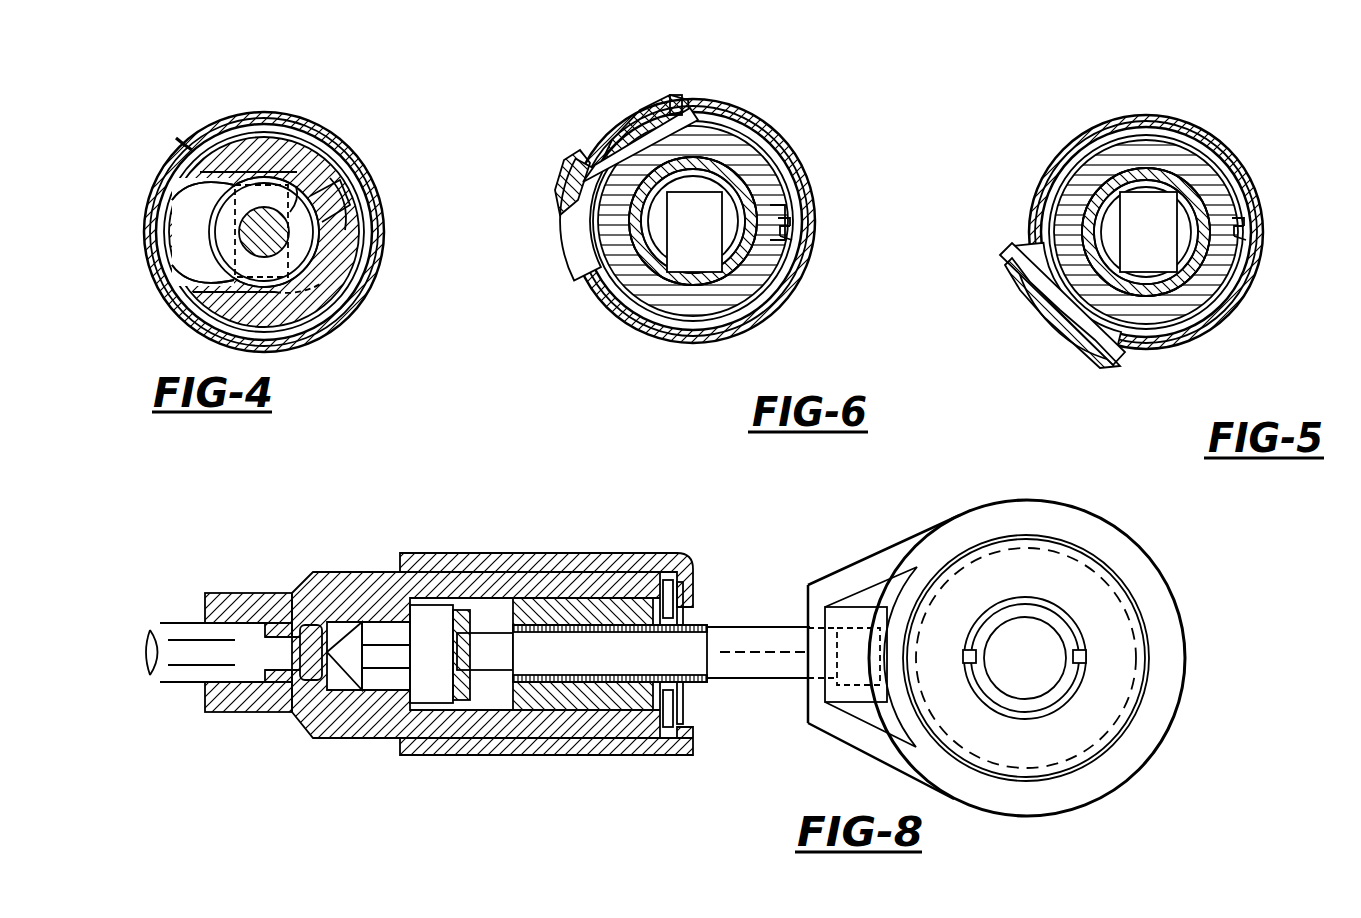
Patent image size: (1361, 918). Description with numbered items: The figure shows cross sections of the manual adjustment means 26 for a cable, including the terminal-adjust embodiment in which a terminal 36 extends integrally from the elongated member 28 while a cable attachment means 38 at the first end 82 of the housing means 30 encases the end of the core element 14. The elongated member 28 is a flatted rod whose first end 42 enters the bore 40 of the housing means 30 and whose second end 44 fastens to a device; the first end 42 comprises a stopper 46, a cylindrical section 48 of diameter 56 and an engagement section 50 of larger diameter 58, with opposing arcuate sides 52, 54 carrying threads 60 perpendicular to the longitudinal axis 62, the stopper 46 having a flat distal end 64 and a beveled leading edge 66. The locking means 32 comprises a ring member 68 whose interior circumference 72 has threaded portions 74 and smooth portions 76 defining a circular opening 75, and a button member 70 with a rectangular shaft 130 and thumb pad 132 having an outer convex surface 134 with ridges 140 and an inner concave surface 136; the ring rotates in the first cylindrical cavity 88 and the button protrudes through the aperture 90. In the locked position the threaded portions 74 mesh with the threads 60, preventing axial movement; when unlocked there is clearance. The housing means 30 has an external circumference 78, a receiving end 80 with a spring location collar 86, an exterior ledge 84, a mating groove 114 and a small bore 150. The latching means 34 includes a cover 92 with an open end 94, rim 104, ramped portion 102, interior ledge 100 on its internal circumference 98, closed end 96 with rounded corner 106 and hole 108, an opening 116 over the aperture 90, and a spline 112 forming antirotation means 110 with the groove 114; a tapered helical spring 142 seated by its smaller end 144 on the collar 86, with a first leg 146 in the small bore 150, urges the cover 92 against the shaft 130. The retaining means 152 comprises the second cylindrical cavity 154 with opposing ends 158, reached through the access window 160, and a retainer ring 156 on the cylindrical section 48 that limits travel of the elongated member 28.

In FIG. 8, the core element 14 is at (160, 680).
In FIG. 4, the adjustment means 26 is at (365, 135).
In FIG. 6, the adjustment means 26 is at (880, 140).
In FIG. 5, the adjustment means 26 is at (1262, 135).
In FIG. 8, the adjustment means 26 is at (1135, 580).
In FIG. 4, the elongated member 28 is at (366, 190).
In FIG. 6, the elongated member 28 is at (770, 200).
In FIG. 5, the elongated member 28 is at (1235, 195).
In FIG. 8, the elongated member 28 is at (770, 625).
In FIG. 4, the housing means 30 is at (332, 247).
In FIG. 6, the housing means 30 is at (770, 135).
In FIG. 5, the housing means 30 is at (1167, 150).
In FIG. 8, the housing means 30 is at (318, 740).
In FIG. 6, the locking means 32 is at (590, 235).
In FIG. 5, the locking means 32 is at (1030, 325).
In FIG. 8, the locking means 32 is at (560, 580).
In FIG. 4, the latching means 34 is at (378, 232).
In FIG. 6, the latching means 34 is at (810, 318).
In FIG. 5, the latching means 34 is at (1193, 150).
In FIG. 8, the latching means 34 is at (692, 756).
In FIG. 8, the terminal 36 is at (1130, 793).
In FIG. 8, the cable attachment means 38 is at (233, 593).
In FIG. 4, the bore 40 is at (325, 178).
In FIG. 6, the bore 40 is at (640, 270).
In FIG. 5, the bore 40 is at (1065, 262).
In FIG. 8, the bore 40 is at (362, 622).
In FIG. 8, the first end 42 is at (440, 645).
In FIG. 8, the second end 44 is at (845, 628).
In FIG. 8, the stopper 46 is at (462, 610).
In FIG. 4, the cylindrical section 48 is at (300, 178).
In FIG. 8, the cylindrical section 48 is at (500, 712).
In FIG. 6, the engagement section 50 is at (735, 165).
In FIG. 5, the engagement section 50 is at (1180, 160).
In FIG. 8, the engagement section 50 is at (532, 612).
In FIG. 4, the arcuate side 52 is at (241, 130).
In FIG. 6, the arcuate side 52 is at (668, 140).
In FIG. 5, the arcuate side 52 is at (1112, 140).
In FIG. 8, the arcuate side 52 is at (575, 598).
In FIG. 4, the arcuate side 54 is at (372, 290).
In FIG. 6, the arcuate side 54 is at (712, 290).
In FIG. 5, the arcuate side 54 is at (1170, 300).
In FIG. 8, the arcuate side 54 is at (550, 712).
In FIG. 4, the diameter 56 is at (222, 210).
In FIG. 6, the diameter 56 is at (693, 221).
In FIG. 5, the diameter 56 is at (1146, 232).
In FIG. 8, the diameter 56 is at (517, 651).
In FIG. 4, the diameter 58 is at (264, 232).
In FIG. 6, the diameter 58 is at (694, 232).
In FIG. 5, the diameter 58 is at (1142, 292).
In FIG. 8, the diameter 58 is at (610, 653).
In FIG. 6, the threads 60 is at (700, 157).
In FIG. 5, the threads 60 is at (1138, 160).
In FIG. 8, the threads 60 is at (620, 598).
In FIG. 8, the longitudinal axis 62 is at (815, 720).
In FIG. 8, the distal end 64 is at (440, 660).
In FIG. 8, the beveled circumferential leading edge 66 is at (410, 700).
In FIG. 6, the ring member 68 is at (745, 160).
In FIG. 5, the ring member 68 is at (1240, 205).
In FIG. 8, the ring member 68 is at (530, 712).
In FIG. 6, the button member 70 is at (652, 97).
In FIG. 5, the button member 70 is at (1045, 330).
In FIG. 6, the interior circumference 72 is at (775, 275).
In FIG. 5, the interior circumference 72 is at (1200, 300).
In FIG. 6, the threaded portions 74 is at (755, 180).
In FIG. 5, the threaded portions 74 is at (1050, 232).
In FIG. 8, the threaded portions 74 is at (590, 598).
In FIG. 6, the circular opening 75 is at (730, 295).
In FIG. 5, the circular opening 75 is at (1215, 175).
In FIG. 6, the smooth portions 76 is at (785, 205).
In FIG. 5, the smooth portions 76 is at (1145, 168).
In FIG. 4, the external circumference 78 is at (318, 342).
In FIG. 6, the external circumference 78 is at (765, 320).
In FIG. 5, the external circumference 78 is at (1245, 290).
In FIG. 8, the receiving end 80 is at (675, 600).
In FIG. 8, the first end 82 is at (290, 592).
In FIG. 8, the exterior ledge 84 is at (480, 572).
In FIG. 8, the spring location collar 86 is at (695, 600).
In FIG. 6, the first internal cylindrical cavity 88 is at (676, 290).
In FIG. 5, the first internal cylindrical cavity 88 is at (1095, 180).
In FIG. 8, the first internal cylindrical cavity 88 is at (522, 590).
In FIG. 6, the aperture 90 is at (660, 290).
In FIG. 5, the aperture 90 is at (1070, 190).
In FIG. 4, the cover 92 is at (145, 185).
In FIG. 6, the cover 92 is at (786, 295).
In FIG. 5, the cover 92 is at (1236, 322).
In FIG. 8, the cover 92 is at (706, 723).
In FIG. 8, the open end 94 is at (385, 572).
In FIG. 8, the closed end 96 is at (700, 745).
In FIG. 4, the internal circumference 98 is at (186, 145).
In FIG. 6, the internal circumference 98 is at (730, 140).
In FIG. 5, the internal circumference 98 is at (1240, 300).
In FIG. 8, the ramped interior ledge 100 is at (512, 553).
In FIG. 8, the ramped circumferential portion 102 is at (440, 572).
In FIG. 8, the rim 104 is at (395, 572).
In FIG. 8, the rounded circumferential corner 106 is at (690, 595).
In FIG. 8, the hole 108 is at (700, 610).
In FIG. 6, the antirotation means 110 is at (792, 220).
In FIG. 5, the antirotation means 110 is at (1246, 220).
In FIG. 6, the spline 112 is at (795, 230).
In FIG. 5, the spline 112 is at (1248, 232).
In FIG. 6, the mating groove 114 is at (795, 245).
In FIG. 5, the mating groove 114 is at (1248, 248).
In FIG. 6, the opening 116 is at (625, 285).
In FIG. 5, the opening 116 is at (1050, 200).
In FIG. 6, the rectangular shaft 130 is at (565, 180).
In FIG. 5, the rectangular shaft 130 is at (1080, 340).
In FIG. 6, the thumb pad 132 is at (580, 140).
In FIG. 5, the thumb pad 132 is at (1010, 300).
In FIG. 6, the outer convex surface 134 is at (555, 190).
In FIG. 5, the outer convex surface 134 is at (1110, 360).
In FIG. 6, the inner concave surface 136 is at (680, 96).
In FIG. 5, the inner concave surface 136 is at (1045, 240).
In FIG. 6, the longitudinal ridges 140 is at (570, 125).
In FIG. 5, the longitudinal ridges 140 is at (1020, 300).
In FIG. 8, the helical wire spring 142 is at (700, 695).
In FIG. 8, the smaller diameter end 144 is at (680, 727).
In FIG. 8, the first leg 146 is at (682, 582).
In FIG. 8, the small bore 150 is at (676, 582).
In FIG. 8, the retaining means 152 is at (385, 712).
In FIG. 4, the second cylindrical cavity 154 is at (210, 270).
In FIG. 8, the second cylindrical cavity 154 is at (420, 605).
In FIG. 4, the retainer ring 156 is at (170, 232).
In FIG. 8, the retainer ring 156 is at (462, 703).
In FIG. 8, the axially opposing ends 158 is at (430, 703).
In FIG. 4, the rectangular access window 160 is at (185, 252).